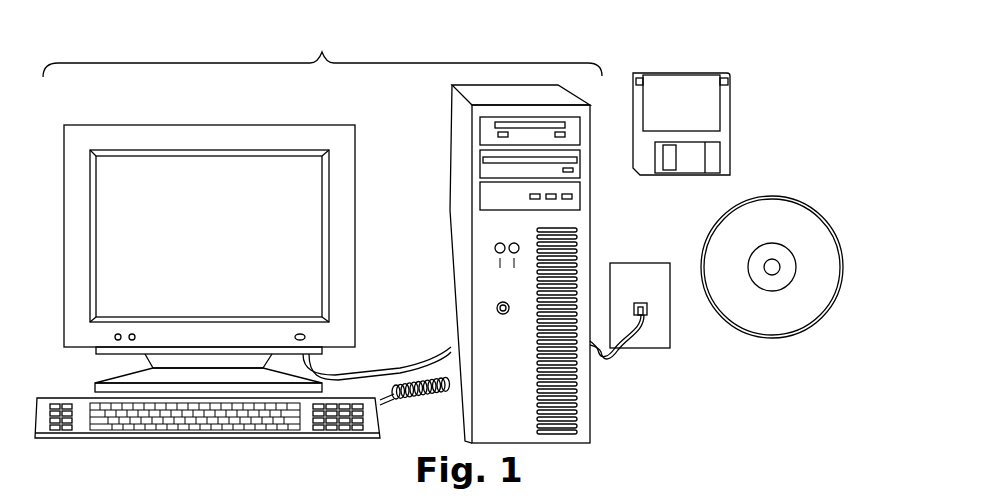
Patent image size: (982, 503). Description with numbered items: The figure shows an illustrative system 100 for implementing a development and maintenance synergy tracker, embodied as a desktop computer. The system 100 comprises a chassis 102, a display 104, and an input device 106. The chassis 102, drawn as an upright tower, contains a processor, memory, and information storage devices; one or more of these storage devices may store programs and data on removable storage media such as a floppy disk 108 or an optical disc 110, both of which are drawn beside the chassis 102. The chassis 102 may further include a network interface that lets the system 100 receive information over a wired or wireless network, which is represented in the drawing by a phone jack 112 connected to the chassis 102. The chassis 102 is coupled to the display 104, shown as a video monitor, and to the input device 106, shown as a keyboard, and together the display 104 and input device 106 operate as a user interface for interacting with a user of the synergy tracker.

The system 100 is at (322, 51).
The chassis 102 is at (451, 297).
The display 104 is at (83, 347).
The input device 106 is at (77, 441).
The floppy disk 108 is at (730, 155).
The optical disc 110 is at (780, 196).
The phone jack 112 is at (634, 264).